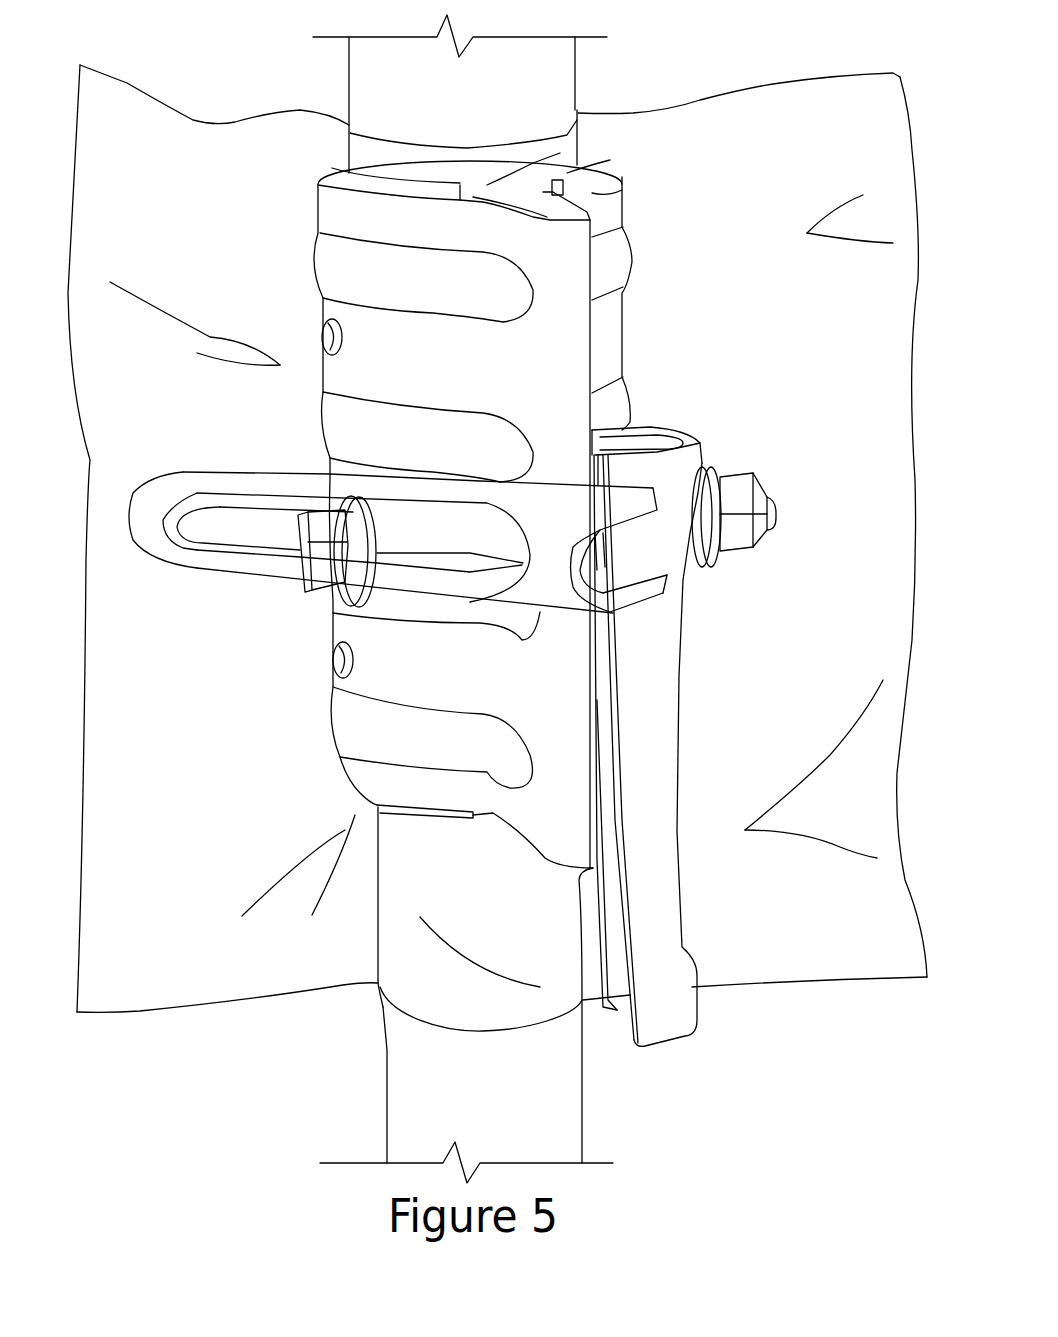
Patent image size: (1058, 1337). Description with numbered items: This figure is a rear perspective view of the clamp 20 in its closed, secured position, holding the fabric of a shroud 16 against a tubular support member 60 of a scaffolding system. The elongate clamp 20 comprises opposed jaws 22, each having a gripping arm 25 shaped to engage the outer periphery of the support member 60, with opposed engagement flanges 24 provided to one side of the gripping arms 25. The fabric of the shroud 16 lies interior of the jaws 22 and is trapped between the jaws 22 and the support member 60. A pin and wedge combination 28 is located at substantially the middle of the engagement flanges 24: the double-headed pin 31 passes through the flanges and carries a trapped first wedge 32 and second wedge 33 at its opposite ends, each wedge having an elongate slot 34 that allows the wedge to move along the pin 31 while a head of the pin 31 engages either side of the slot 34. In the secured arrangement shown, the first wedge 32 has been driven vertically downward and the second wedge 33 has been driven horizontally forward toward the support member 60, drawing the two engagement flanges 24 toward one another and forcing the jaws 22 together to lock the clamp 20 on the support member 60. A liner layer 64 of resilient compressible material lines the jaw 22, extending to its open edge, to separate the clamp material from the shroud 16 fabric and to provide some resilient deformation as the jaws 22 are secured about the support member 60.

The shroud 16 is at (162, 970).
The clamp 20 is at (633, 81).
The jaws 22 is at (328, 337).
The engagement flanges 24 is at (553, 193).
The gripping arms 25 is at (377, 233).
The pin and wedge combination 28 is at (280, 602).
The pin 31 is at (395, 545).
The first wedge 32 is at (700, 687).
The second wedge 33 is at (615, 579).
The elongate slot 34 is at (223, 530).
The support member 60 is at (380, 128).
The liner layer 64 is at (593, 178).